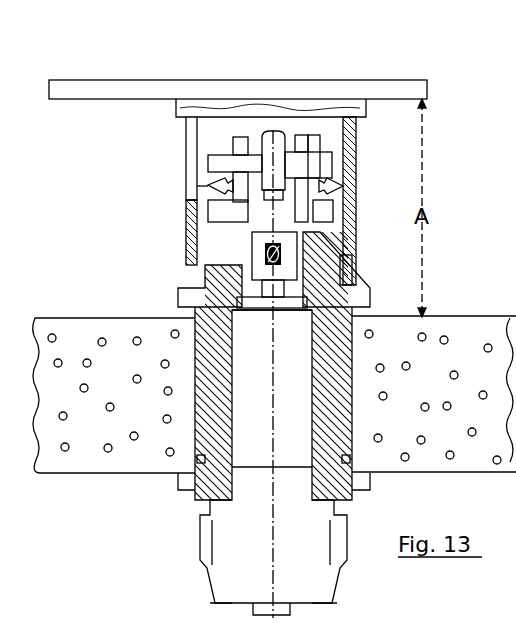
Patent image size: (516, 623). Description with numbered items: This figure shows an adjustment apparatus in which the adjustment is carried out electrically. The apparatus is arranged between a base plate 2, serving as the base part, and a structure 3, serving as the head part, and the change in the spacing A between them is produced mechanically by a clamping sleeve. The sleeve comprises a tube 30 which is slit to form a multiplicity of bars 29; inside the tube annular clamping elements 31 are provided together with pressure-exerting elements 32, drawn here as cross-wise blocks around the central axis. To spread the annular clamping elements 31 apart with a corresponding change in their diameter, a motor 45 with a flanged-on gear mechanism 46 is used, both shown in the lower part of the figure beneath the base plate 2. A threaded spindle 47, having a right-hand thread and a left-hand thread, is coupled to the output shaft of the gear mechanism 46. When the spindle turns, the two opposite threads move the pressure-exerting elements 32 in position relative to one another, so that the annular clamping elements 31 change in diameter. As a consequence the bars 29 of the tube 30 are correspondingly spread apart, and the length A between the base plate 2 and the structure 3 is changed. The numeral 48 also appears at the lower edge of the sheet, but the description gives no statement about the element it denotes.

The structure 3 is at (80, 91).
The tube 30 is at (350, 248).
The threaded spindle 47 is at (352, 262).
The pressure-exerting elements 32 is at (225, 156).
The annular clamping elements 31 is at (182, 170).
The bars 29 is at (188, 188).
The gear mechanism 46 is at (250, 365).
The base plate 2 is at (50, 470).
The motor 45 is at (245, 515).
The lower element 48 is at (426, 617).